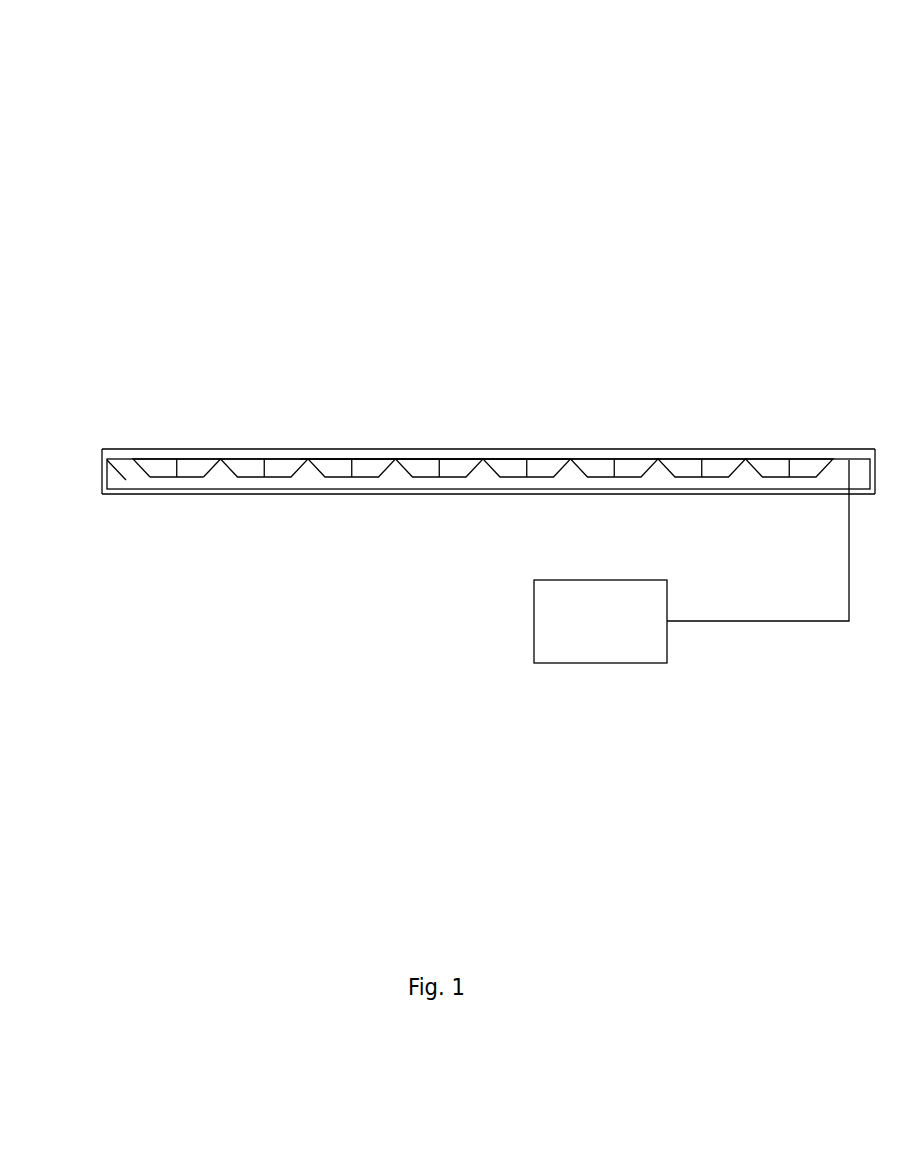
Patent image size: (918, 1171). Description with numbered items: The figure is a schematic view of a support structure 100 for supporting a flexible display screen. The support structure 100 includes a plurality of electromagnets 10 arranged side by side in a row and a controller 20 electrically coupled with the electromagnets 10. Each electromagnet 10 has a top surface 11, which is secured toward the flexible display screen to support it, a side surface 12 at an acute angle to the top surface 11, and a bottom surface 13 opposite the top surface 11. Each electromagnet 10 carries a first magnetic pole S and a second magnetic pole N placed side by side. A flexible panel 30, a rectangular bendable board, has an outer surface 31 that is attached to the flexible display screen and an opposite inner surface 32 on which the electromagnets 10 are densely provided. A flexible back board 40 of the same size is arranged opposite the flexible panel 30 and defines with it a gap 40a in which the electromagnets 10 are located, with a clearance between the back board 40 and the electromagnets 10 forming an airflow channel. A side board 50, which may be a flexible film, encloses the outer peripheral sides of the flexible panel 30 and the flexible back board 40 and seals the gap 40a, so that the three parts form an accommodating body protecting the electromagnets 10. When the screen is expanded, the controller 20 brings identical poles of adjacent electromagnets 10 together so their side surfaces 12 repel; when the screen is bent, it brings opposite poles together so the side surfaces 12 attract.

The support structure 100 is at (644, 70).
The electromagnet 10 is at (265, 459).
The top surface 11 is at (147, 461).
The side surface 12 is at (208, 470).
The bottom surface 13 is at (158, 478).
The controller 20 is at (533, 642).
The flexible panel 30 is at (803, 455).
The outer surface 31 is at (577, 450).
The inner surface 32 is at (568, 452).
The flexible back board 40 is at (585, 494).
The gap 40a is at (102, 451).
The side board 50 is at (102, 469).